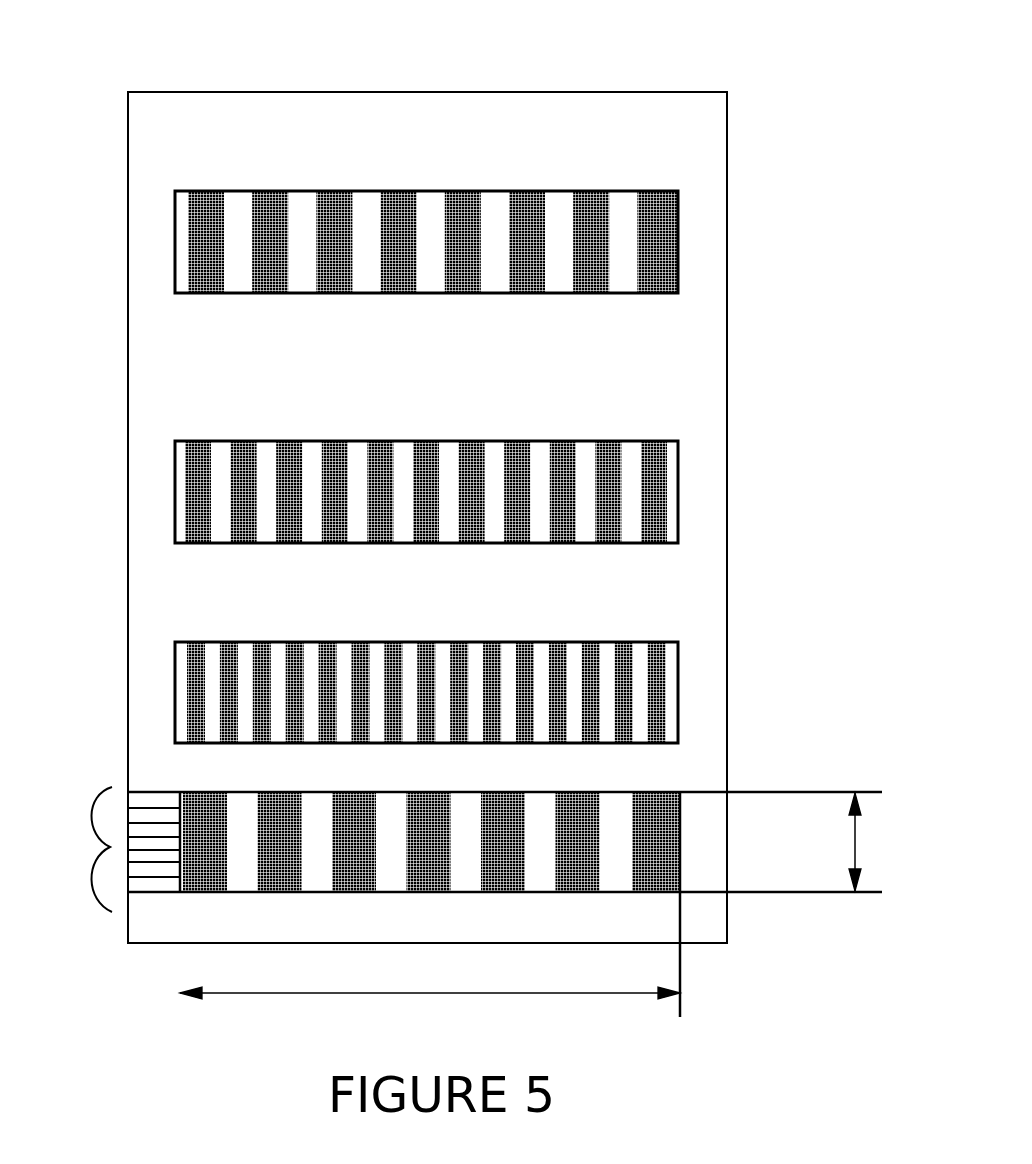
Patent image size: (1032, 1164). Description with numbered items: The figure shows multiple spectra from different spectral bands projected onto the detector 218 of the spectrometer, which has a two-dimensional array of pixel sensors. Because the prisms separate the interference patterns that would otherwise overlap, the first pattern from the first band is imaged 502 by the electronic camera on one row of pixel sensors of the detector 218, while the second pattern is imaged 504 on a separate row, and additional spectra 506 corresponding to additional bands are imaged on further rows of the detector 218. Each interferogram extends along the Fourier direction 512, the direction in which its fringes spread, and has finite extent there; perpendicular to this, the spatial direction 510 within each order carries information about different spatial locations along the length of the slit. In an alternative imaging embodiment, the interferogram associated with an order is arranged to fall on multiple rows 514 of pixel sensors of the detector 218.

The detector 218 is at (405, 117).
The additional spectra 506 is at (680, 265).
The second pattern image 504 is at (678, 692).
The first pattern image 502 is at (682, 812).
The spatial direction 510 is at (890, 842).
The Fourier direction 512 is at (430, 904).
The multiple rows of pixel sensors 514 is at (107, 848).